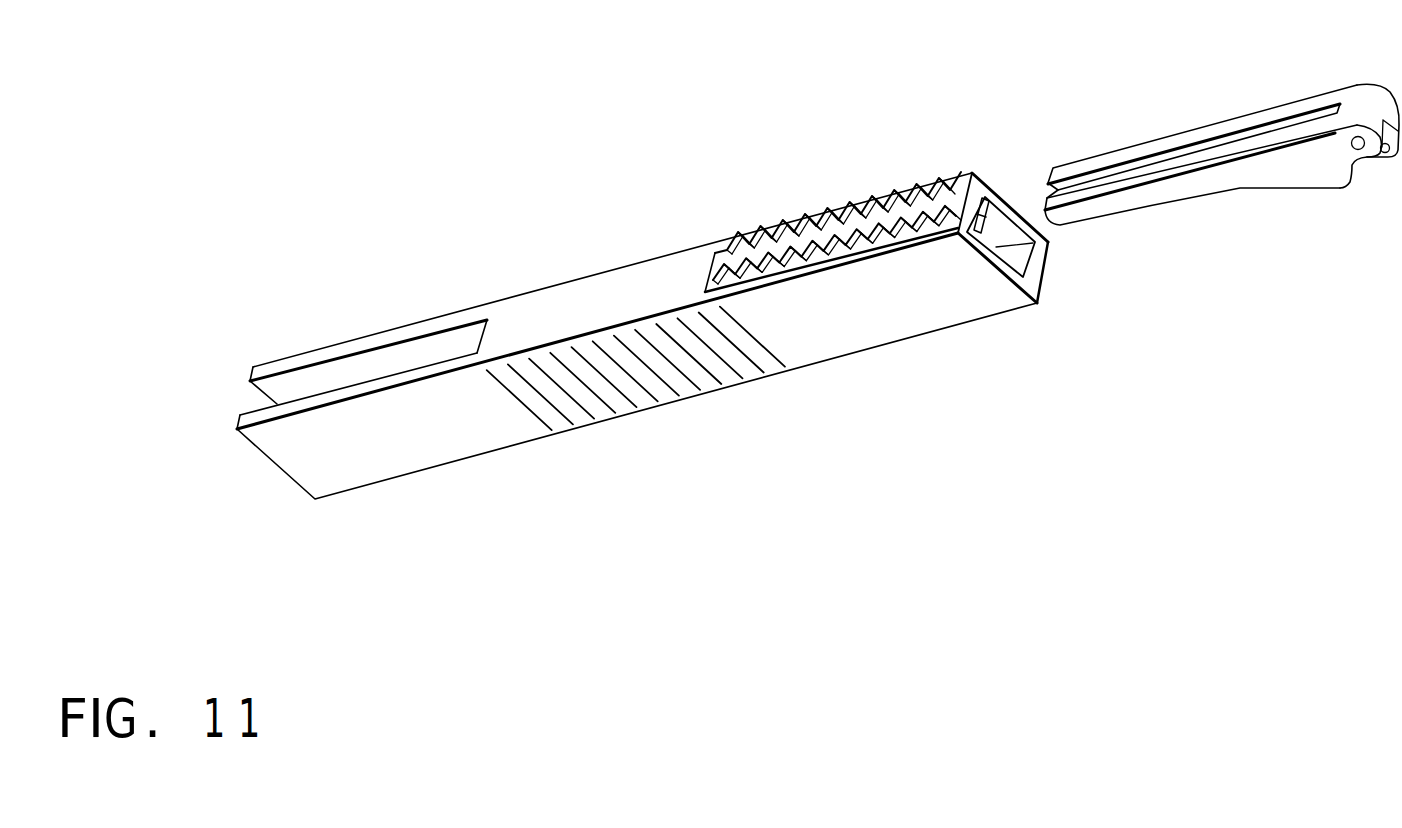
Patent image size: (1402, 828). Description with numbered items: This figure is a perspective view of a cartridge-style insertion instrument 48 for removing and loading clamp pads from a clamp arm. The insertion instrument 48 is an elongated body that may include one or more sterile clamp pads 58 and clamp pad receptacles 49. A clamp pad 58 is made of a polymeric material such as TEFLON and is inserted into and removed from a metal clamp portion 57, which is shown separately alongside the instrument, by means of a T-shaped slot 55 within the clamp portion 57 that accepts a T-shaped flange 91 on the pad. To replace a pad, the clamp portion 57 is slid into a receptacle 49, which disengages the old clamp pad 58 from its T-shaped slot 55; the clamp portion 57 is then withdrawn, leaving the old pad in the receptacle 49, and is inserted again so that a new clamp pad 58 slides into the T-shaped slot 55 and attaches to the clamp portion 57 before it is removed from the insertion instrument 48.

The insertion instrument 48 is at (427, 452).
The clamp pad receptacle 49 is at (407, 351).
The clamp pad 58 is at (838, 203).
The T-shaped flange 91 is at (992, 194).
The T-shaped slot 55 is at (1140, 161).
The clamp portion 57 is at (1258, 174).